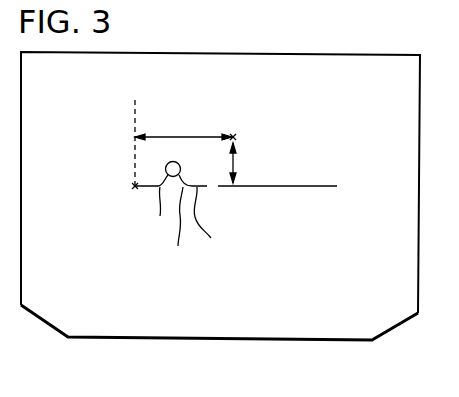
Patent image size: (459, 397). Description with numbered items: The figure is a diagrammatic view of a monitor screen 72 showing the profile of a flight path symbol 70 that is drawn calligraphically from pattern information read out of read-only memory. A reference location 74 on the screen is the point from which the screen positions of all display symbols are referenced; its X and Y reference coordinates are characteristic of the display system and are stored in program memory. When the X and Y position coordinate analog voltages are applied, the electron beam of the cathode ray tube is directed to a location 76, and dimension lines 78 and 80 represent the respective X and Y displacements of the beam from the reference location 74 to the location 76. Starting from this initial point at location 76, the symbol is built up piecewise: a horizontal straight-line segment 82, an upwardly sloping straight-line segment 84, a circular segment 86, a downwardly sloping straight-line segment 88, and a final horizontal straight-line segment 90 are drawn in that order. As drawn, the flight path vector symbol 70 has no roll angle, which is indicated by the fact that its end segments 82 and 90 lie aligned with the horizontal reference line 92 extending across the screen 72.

The flight path symbol 70 is at (132, 245).
The monitor screen 72 is at (47, 325).
The reference location 74 is at (233, 134).
The location 76 is at (135, 186).
The dimension line 78 is at (174, 137).
The dimension line 80 is at (233, 168).
The horizontal straight-line segment 82 is at (142, 187).
The upwardly sloping straight-line segment 84 is at (160, 212).
The circular segment 86 is at (180, 167).
The downwardly sloping straight-line segment 88 is at (187, 220).
The horizontal straight-line segment 90 is at (212, 219).
The horizontal reference line 92 is at (303, 185).